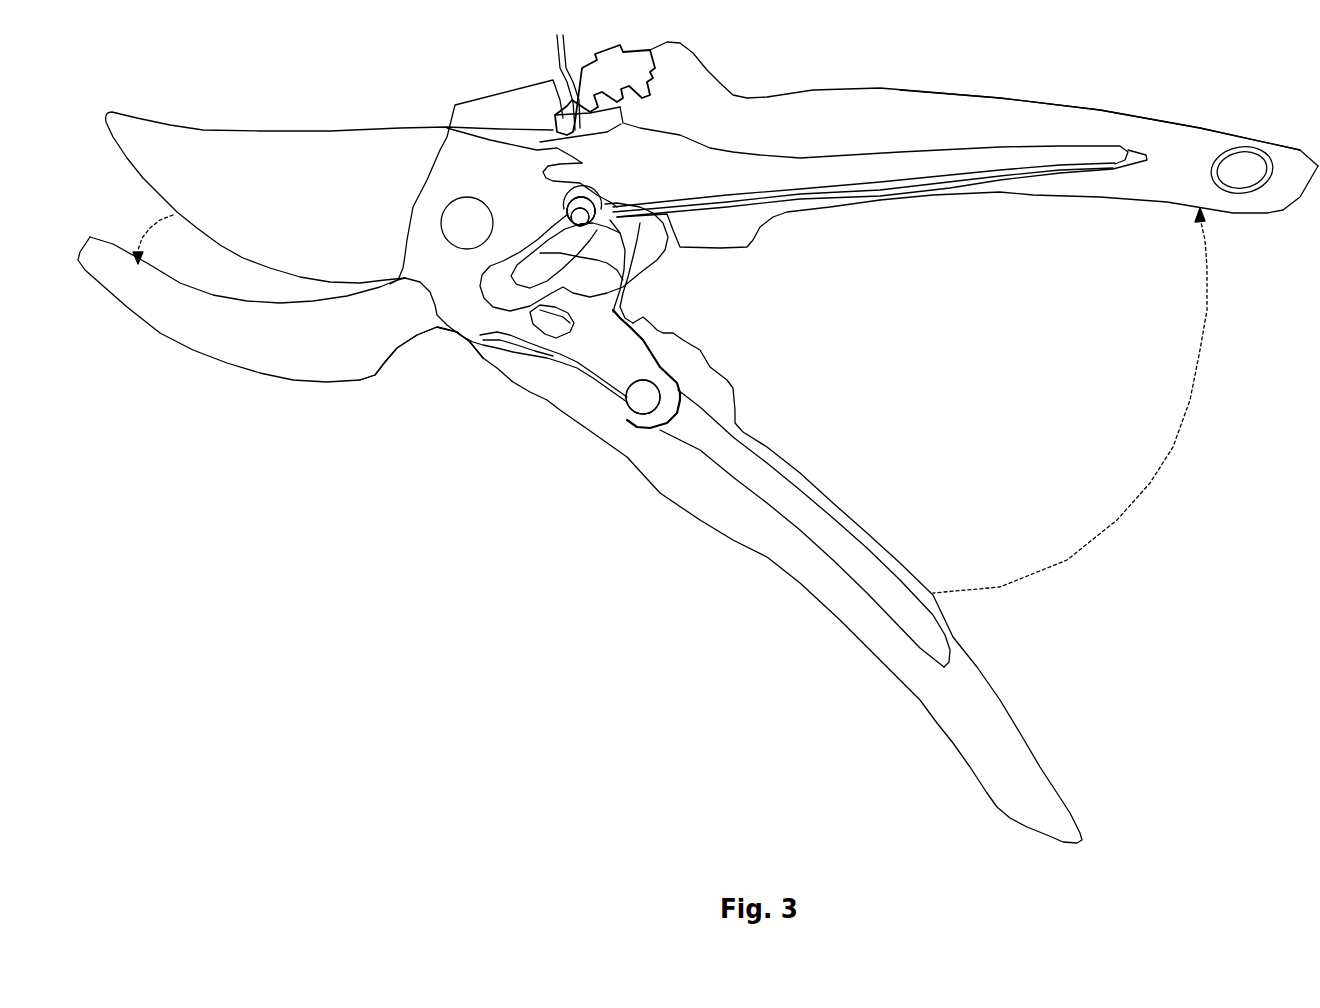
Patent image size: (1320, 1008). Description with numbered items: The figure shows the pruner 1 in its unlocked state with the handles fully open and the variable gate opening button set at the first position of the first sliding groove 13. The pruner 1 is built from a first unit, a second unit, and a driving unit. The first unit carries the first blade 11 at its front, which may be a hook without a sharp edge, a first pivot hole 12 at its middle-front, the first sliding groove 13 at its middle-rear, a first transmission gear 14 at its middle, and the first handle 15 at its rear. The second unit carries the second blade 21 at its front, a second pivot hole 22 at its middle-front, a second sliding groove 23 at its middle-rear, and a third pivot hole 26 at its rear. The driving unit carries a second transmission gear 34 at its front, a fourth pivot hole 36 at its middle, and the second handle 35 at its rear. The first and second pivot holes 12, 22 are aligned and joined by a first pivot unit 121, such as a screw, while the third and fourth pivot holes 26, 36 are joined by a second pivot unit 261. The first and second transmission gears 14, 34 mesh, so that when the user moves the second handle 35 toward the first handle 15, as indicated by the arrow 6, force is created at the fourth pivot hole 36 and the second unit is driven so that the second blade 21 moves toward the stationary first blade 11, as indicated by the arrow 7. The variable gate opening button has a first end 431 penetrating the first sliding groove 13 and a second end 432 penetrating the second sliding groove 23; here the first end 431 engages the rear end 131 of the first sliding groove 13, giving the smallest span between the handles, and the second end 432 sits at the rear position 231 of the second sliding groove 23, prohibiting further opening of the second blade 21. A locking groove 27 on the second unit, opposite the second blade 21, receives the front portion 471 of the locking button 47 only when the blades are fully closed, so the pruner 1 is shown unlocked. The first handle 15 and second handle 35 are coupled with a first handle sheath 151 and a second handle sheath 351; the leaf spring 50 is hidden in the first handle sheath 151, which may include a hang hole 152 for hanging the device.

The pruner 1 is at (380, 568).
The arrow 6 is at (1190, 418).
The arrow 7 is at (142, 223).
The first blade 11 is at (220, 313).
The first pivot hole 12 is at (508, 238).
The first sliding groove 13 is at (617, 284).
The first transmission gear 14 is at (490, 368).
The first handle 15 is at (984, 114).
The second blade 21 is at (263, 160).
The second pivot hole 22 is at (552, 321).
The second sliding groove 23 is at (502, 290).
The third pivot hole 26 is at (643, 397).
The locking groove 27 is at (560, 162).
The second transmission gear 34 is at (565, 307).
The second handle 35 is at (782, 531).
The fourth pivot hole 36 is at (646, 369).
The locking button 47 is at (611, 69).
The leaf spring 50 is at (1023, 173).
The first pivot unit 121 is at (467, 232).
The rear end 131 is at (581, 211).
The first handle sheath 151 is at (980, 123).
The hang hole 152 is at (1233, 170).
The rear position 231 is at (581, 211).
The second pivot unit 261 is at (643, 400).
The second handle sheath 351 is at (933, 699).
The first end 431 is at (598, 218).
The second end 432 is at (580, 217).
The front portion 471 is at (560, 66).